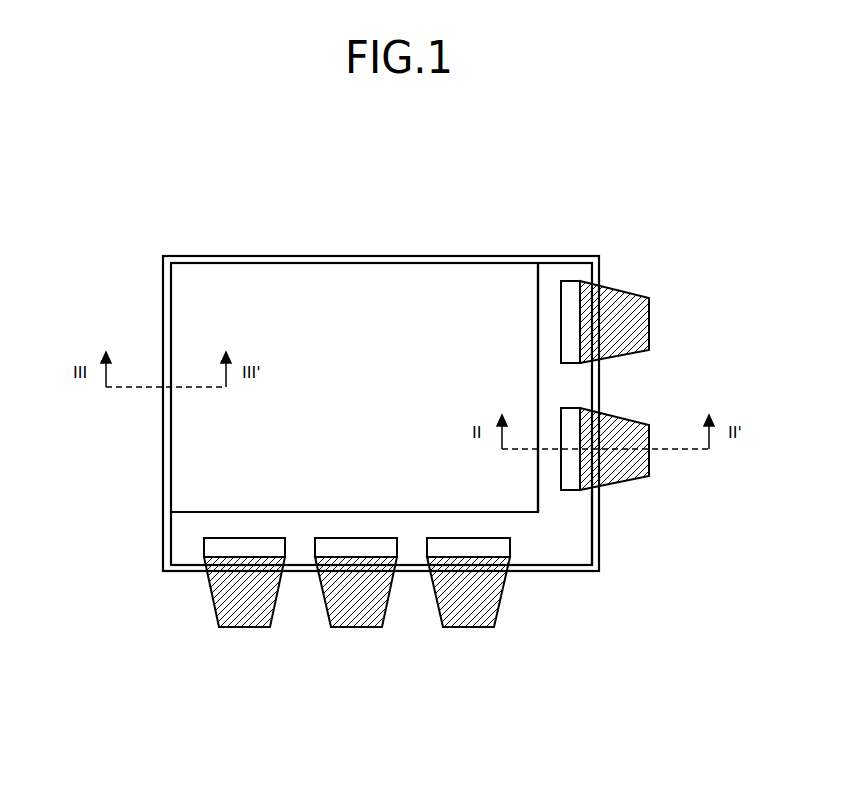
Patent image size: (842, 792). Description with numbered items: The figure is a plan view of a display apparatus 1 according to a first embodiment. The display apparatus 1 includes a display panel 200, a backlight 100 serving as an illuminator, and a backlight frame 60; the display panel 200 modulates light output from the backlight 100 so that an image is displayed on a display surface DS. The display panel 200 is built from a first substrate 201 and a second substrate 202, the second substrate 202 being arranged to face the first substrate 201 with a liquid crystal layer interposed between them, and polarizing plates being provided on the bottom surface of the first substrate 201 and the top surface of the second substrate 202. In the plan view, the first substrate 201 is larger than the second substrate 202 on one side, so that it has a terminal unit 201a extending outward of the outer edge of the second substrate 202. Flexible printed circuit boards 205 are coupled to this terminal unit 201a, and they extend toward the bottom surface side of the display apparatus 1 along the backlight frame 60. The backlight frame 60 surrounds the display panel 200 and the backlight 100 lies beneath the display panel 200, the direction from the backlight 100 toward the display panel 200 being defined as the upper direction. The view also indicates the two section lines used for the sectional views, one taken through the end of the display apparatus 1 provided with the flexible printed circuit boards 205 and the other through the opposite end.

The display apparatus 1 is at (630, 188).
The backlight frame 60 is at (600, 567).
The backlight 100 is at (572, 574).
The display panel 200 is at (425, 261).
The first substrate 201 is at (567, 273).
The terminal unit 201a is at (572, 540).
The second substrate 202 is at (473, 295).
The flexible printed circuit board 205 is at (624, 305).
The display surface DS is at (366, 295).